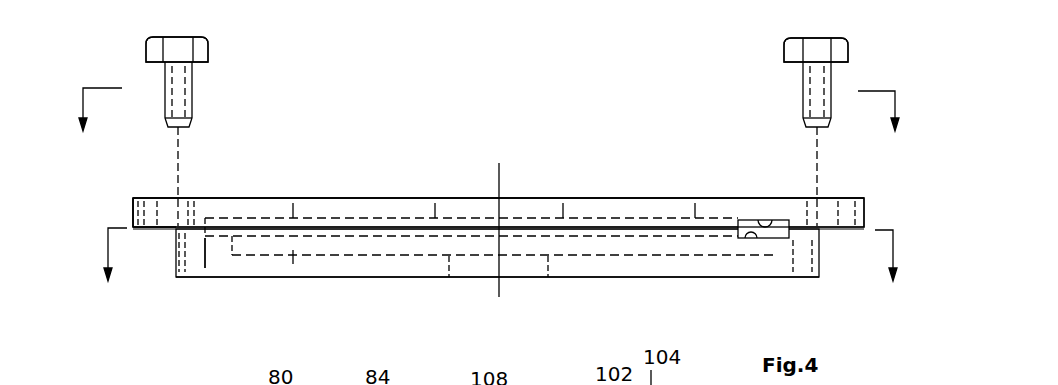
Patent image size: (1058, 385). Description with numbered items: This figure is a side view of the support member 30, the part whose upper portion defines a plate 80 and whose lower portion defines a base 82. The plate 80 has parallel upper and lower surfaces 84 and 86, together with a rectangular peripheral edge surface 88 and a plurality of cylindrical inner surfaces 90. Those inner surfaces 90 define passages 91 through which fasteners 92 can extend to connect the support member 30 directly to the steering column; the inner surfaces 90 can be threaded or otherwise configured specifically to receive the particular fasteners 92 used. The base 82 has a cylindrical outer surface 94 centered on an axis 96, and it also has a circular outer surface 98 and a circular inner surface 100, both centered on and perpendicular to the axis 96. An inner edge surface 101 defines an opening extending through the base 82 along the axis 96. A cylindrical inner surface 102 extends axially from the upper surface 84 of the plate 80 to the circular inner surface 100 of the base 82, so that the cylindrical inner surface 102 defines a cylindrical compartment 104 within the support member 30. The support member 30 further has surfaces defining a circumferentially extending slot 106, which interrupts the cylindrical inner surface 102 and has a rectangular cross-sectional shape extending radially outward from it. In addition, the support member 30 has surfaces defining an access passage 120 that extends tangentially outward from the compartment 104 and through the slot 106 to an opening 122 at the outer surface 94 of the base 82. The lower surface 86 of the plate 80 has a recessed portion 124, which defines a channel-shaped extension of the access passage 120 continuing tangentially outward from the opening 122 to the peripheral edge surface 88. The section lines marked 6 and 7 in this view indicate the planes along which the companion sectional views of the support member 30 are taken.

The support member 30 is at (338, 135).
The plate 80 is at (143, 190).
The base 82 is at (168, 262).
The upper surface 84 is at (140, 193).
The lower surface 86 is at (143, 229).
The peripheral edge surface 88 is at (132, 205).
The cylindrical inner surfaces 90 is at (188, 197).
The passages 91 is at (165, 182).
The fasteners 92 is at (197, 52).
The cylindrical outer surface 94 is at (218, 258).
The axis 96 is at (498, 177).
The circular outer surface 98 is at (355, 279).
The circular inner surface 100 is at (399, 255).
The inner edge surface 101 is at (548, 260).
The cylindrical inner surface 102 is at (240, 206).
The cylindrical compartment 104 is at (528, 232).
The circumferentially extending slot 106 is at (282, 205).
The access passage 120 is at (790, 241).
The opening 122 is at (755, 240).
The recessed portion 124 is at (757, 219).
The section line 6- 6 is at (487, 123).
The section line 7- 7 is at (500, 267).